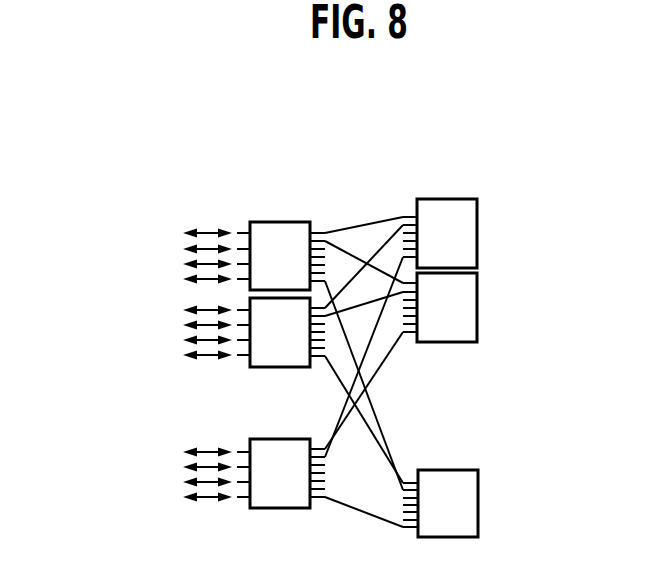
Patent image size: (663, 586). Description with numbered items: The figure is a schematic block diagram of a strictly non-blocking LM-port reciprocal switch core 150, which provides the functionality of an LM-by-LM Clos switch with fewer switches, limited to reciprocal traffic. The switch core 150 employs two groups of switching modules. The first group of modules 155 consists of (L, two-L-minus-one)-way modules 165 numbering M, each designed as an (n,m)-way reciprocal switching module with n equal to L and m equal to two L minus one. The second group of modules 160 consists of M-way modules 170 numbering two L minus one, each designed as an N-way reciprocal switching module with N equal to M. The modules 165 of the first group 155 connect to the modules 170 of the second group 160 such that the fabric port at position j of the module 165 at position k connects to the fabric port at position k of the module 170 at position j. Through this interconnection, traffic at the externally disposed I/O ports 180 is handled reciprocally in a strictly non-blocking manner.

The switch core 150 is at (559, 162).
The first group of modules 155 is at (249, 141).
The second group of modules 160 is at (414, 124).
The (L,2L-1)-way module 165 is at (263, 367).
The M-way module 170 is at (477, 231).
The I/O ports 180 is at (207, 233).